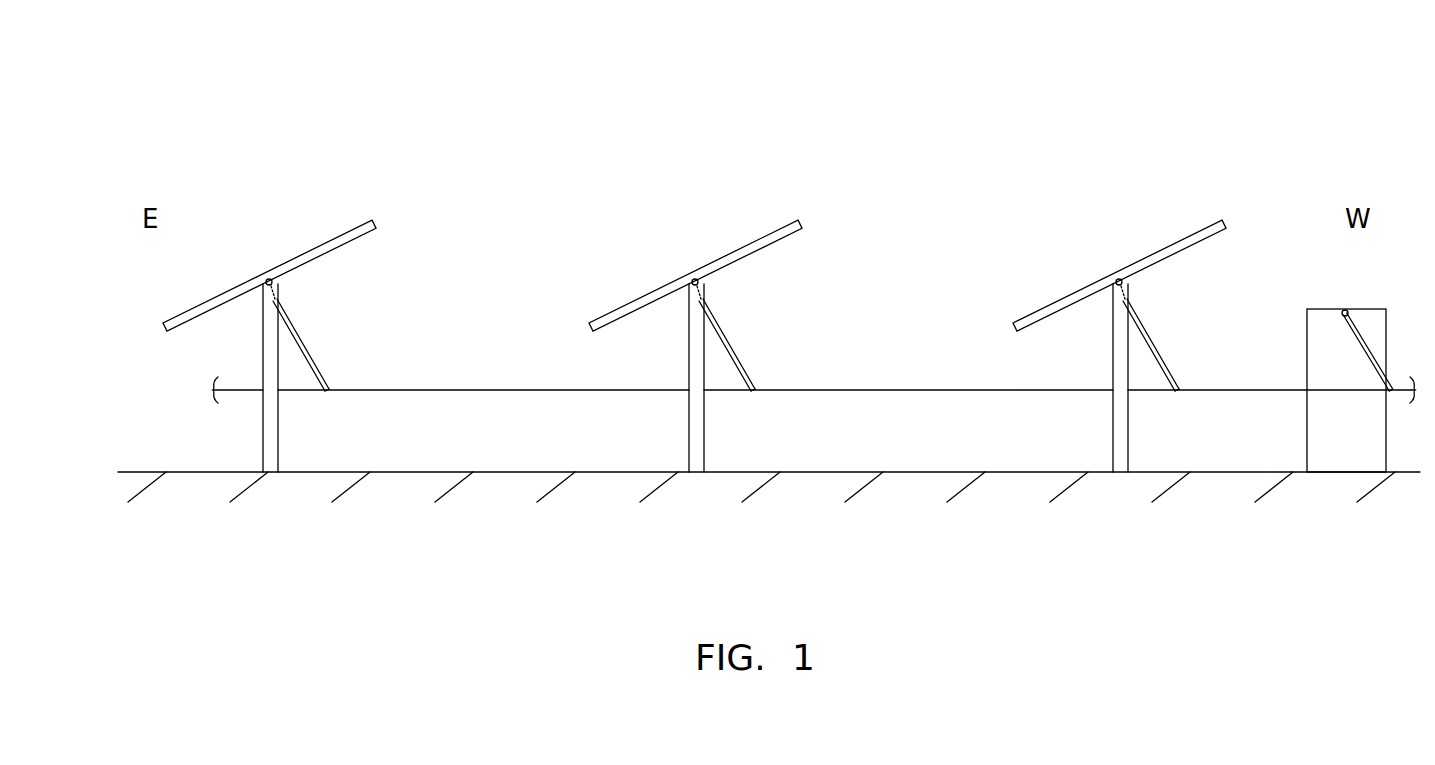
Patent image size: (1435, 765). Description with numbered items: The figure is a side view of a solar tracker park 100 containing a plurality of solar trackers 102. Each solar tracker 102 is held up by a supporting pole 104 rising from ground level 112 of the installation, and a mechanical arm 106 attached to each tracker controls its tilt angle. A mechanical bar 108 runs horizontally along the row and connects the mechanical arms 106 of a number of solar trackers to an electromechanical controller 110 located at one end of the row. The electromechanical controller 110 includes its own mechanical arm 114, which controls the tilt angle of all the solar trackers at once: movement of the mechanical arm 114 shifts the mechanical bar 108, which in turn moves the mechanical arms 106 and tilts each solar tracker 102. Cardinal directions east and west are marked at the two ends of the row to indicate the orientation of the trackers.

The solar tracker park 100 is at (318, 73).
The solar tracker 102 is at (333, 244).
The supporting pole 104 is at (272, 352).
The mechanical arm 106 is at (300, 335).
The mechanical bar 108 is at (458, 388).
The electromechanical controller 110 is at (1327, 317).
The ground level 112 is at (923, 470).
The mechanical arm 114 is at (1373, 353).